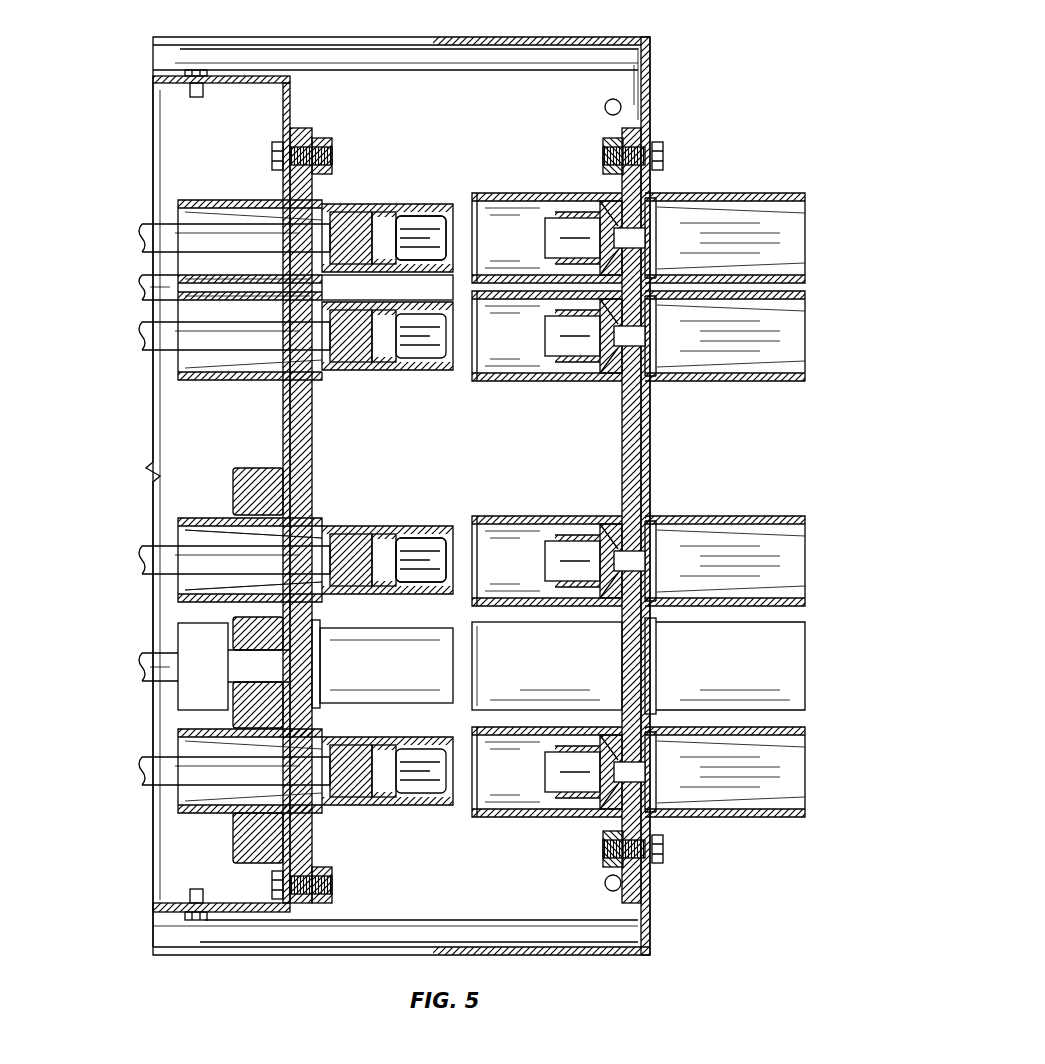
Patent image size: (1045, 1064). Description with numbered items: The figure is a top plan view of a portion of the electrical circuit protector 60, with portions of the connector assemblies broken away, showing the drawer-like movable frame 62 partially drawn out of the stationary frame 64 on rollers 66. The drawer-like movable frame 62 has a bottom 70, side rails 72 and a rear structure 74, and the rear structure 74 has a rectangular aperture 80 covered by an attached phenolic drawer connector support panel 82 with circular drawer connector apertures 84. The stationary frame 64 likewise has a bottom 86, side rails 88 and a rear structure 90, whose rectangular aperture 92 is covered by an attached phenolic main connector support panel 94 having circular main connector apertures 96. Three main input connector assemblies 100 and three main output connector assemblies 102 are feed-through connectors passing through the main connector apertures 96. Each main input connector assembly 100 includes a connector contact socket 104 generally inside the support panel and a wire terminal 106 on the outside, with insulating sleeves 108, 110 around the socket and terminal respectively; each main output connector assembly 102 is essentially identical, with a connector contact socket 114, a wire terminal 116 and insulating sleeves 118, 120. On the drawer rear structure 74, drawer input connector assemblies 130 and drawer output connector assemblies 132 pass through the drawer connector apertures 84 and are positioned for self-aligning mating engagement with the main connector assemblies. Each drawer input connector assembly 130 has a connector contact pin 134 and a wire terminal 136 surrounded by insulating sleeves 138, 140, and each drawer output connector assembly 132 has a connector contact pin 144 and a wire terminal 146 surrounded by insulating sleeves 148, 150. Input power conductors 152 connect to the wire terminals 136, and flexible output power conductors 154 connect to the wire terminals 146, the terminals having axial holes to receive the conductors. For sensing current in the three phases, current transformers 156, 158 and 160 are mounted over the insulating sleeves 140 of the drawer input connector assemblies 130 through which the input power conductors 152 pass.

The electrical circuit protector 60 is at (230, 982).
The drawer-like movable frame 62 is at (165, 889).
The stationary frame 64 is at (212, 944).
The rollers 66 is at (197, 904).
The bottom 70 is at (226, 436).
The side rails 72 is at (235, 908).
The rear structure 74 is at (292, 116).
The rectangular aperture 80 is at (285, 185).
The drawer connector support panel 82 is at (307, 445).
The drawer connector apertures 84 is at (330, 205).
The bottom 86 is at (520, 890).
The side rails 88 is at (336, 956).
The rear structure 90 is at (660, 75).
The rectangular aperture 92 is at (604, 200).
The main connector support panel 94 is at (628, 438).
The main connector apertures 96 is at (608, 375).
The main input connector assemblies 100 is at (714, 836).
The main output connector assemblies 102 is at (718, 92).
The connector contact socket 104 is at (548, 545).
The wire terminal 106 is at (650, 547).
The insulating sleeve 108 is at (508, 515).
The insulating sleeve 110 is at (665, 516).
The connector contact socket 114 is at (560, 226).
The wire terminal 116 is at (645, 225).
The insulating sleeve 118 is at (525, 200).
The insulating sleeve 120 is at (718, 195).
The drawer input connector assemblies 130 is at (428, 822).
The drawer output connector assemblies 132 is at (283, 256).
The connector contact pin 134 is at (433, 590).
The wire terminal 136 is at (180, 586).
The insulating sleeve 138 is at (380, 526).
The insulating sleeve 140 is at (180, 517).
The connector contact pin 144 is at (430, 216).
The wire terminal 146 is at (270, 215).
The insulating sleeve 148 is at (392, 204).
The insulating sleeve 150 is at (210, 200).
The input power conductors 152 is at (143, 771).
The output power conductors 154 is at (140, 335).
The current transformer 156 is at (235, 717).
The current transformer 158 is at (236, 633).
The current transformer 160 is at (145, 662).